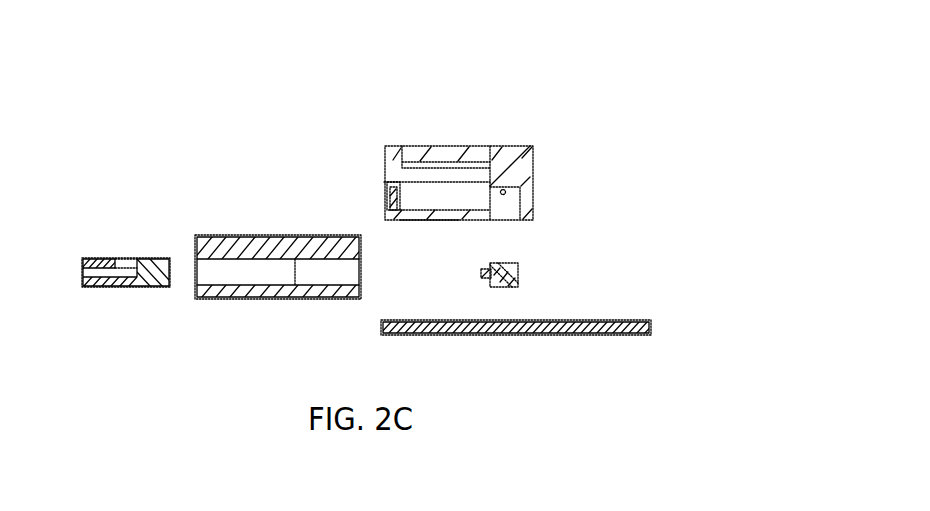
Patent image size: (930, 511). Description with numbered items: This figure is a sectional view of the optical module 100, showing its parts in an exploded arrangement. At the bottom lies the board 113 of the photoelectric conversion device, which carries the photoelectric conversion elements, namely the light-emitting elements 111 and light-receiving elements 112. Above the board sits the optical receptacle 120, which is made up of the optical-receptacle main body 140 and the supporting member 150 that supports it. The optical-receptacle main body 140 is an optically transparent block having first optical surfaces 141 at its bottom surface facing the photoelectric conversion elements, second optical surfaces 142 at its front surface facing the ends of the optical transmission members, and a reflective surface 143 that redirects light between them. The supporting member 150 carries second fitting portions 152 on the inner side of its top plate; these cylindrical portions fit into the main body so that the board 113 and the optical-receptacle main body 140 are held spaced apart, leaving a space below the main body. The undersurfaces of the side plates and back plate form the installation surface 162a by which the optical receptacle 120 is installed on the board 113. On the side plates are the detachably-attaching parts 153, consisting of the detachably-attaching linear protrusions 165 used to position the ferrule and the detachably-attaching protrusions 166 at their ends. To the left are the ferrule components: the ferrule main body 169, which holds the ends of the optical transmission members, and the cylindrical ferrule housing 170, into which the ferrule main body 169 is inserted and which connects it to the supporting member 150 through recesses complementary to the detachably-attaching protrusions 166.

The optical module 100 is at (713, 127).
The light-emitting elements 111 is at (505, 320).
The light-receiving elements 112 is at (518, 327).
The board 113 is at (630, 325).
The optical receptacle 120 is at (608, 108).
The optical-receptacle main body 140 is at (515, 268).
The first optical surfaces 141 is at (502, 287).
The second optical surfaces 142 is at (483, 273).
The reflective surface 143 is at (508, 266).
The supporting member 150 is at (512, 157).
The second fitting portions 152 is at (503, 190).
The detachably-attaching parts 153 is at (455, 108).
The installation surface 162a is at (430, 220).
The detachably-attaching linear protrusions 165 is at (436, 203).
The detachably-attaching protrusions 166 is at (392, 205).
The ferrule main body 169 is at (148, 259).
The ferrule housing 170 is at (262, 237).